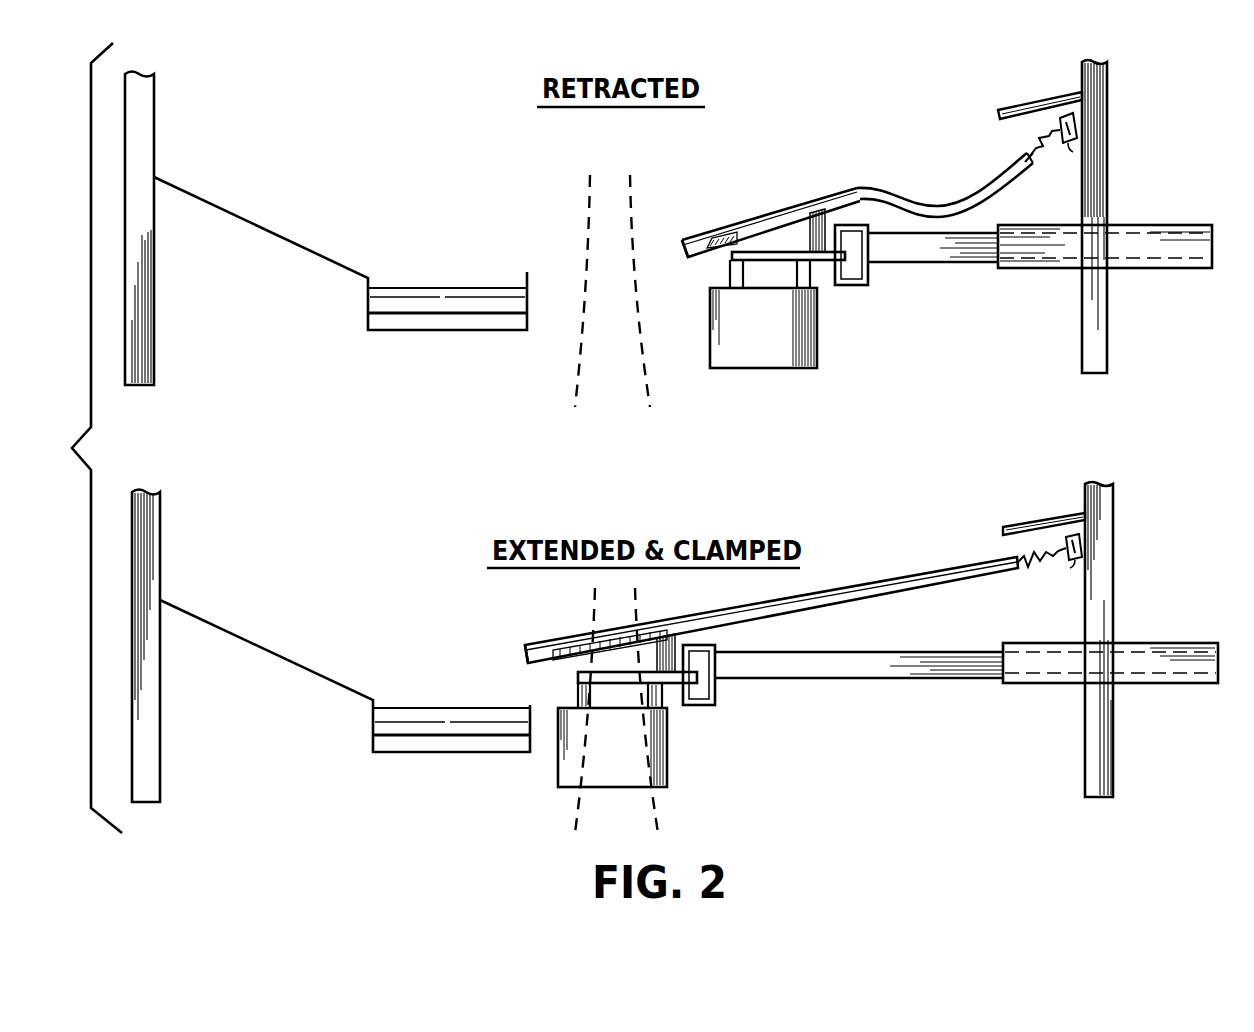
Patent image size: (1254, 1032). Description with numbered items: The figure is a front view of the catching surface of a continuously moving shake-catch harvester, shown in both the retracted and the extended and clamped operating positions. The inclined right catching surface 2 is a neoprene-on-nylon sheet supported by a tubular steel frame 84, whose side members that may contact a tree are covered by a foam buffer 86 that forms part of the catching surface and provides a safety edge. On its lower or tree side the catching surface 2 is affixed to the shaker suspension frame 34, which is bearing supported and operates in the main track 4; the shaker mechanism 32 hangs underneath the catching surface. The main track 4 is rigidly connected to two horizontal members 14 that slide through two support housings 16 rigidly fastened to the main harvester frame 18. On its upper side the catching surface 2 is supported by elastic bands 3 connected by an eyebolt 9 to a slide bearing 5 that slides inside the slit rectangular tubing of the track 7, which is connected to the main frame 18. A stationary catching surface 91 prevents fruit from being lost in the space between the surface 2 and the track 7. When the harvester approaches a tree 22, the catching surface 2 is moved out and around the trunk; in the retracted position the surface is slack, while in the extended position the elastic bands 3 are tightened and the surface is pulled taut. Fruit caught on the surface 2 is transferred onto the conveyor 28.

The right catching surface 2 is at (852, 190).
The elastic bands 3 is at (1040, 145).
The main track 4 is at (868, 272).
The slide bearing 5 is at (1075, 123).
The track 7 is at (1073, 152).
The eyebolt 9 is at (1016, 143).
The horizontal members 14 is at (948, 253).
The support housings 16 is at (1152, 268).
The main harvester frame 18 is at (154, 278).
The tree 22 is at (630, 212).
The conveyor 28 is at (418, 317).
The shaker mechanism 32 is at (756, 350).
The shaker suspension frame 34 is at (822, 263).
The tubular steel frame 84 is at (720, 252).
The foam buffer 86 is at (687, 257).
The stationary catching surface 91 is at (1042, 100).